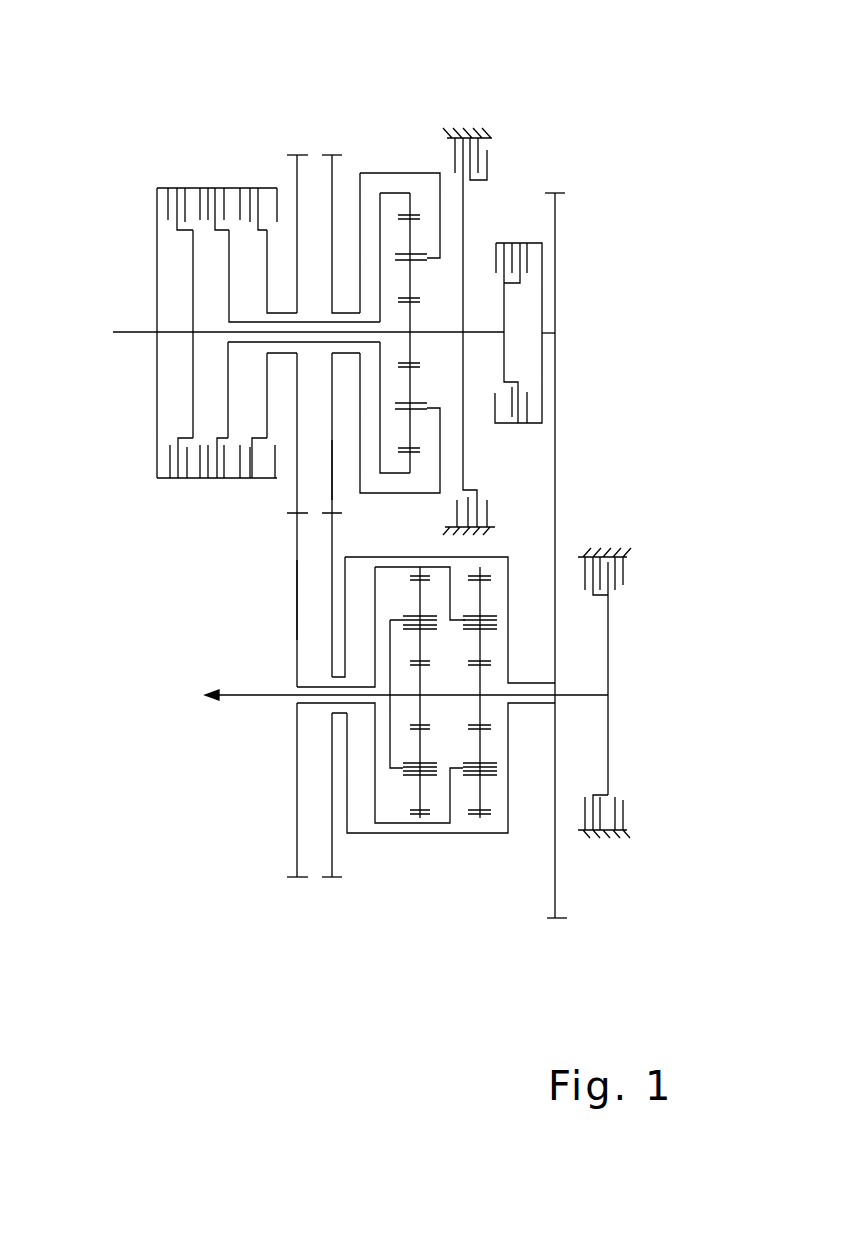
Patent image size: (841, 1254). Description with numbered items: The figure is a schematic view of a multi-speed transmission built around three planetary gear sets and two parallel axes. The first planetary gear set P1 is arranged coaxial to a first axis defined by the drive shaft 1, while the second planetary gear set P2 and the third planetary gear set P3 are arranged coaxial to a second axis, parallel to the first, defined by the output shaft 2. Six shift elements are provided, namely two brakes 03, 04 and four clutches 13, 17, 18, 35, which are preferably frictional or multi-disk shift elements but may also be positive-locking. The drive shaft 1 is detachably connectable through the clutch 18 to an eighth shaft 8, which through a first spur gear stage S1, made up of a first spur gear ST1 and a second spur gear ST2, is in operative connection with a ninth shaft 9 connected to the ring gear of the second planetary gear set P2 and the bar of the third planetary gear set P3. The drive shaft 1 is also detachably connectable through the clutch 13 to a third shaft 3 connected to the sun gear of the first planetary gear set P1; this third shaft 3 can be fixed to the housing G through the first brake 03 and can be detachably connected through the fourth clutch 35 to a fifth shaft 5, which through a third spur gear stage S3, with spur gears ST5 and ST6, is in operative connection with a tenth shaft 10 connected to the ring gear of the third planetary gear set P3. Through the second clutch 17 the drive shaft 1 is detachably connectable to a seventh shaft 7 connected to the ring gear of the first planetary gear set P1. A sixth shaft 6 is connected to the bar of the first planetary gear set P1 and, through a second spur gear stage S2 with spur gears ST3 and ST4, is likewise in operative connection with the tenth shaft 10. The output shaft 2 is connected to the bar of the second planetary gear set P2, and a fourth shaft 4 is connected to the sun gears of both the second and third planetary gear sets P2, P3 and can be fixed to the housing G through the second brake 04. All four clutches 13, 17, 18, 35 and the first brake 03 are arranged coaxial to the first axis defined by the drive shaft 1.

The drive shaft 1 is at (138, 334).
The output shaft 2 is at (252, 698).
The third shaft 3 is at (467, 238).
The fourth shaft 4 is at (612, 637).
The fifth shaft 5 is at (548, 328).
The sixth shaft 6 is at (330, 467).
The seventh shaft 7 is at (228, 257).
The eighth shaft 8 is at (297, 500).
The ninth shaft 9 is at (297, 593).
The tenth shaft 10 is at (497, 552).
The first clutch 13 is at (157, 198).
The second clutch 17 is at (213, 195).
The first clutch 18 is at (250, 193).
The fourth clutch 35 is at (527, 268).
The first spur gear stage S1 is at (297, 130).
The second spur gear stage S2 is at (332, 130).
The third spur gear stage S3 is at (555, 170).
The first planetary gear set P1 is at (410, 152).
The second planetary gear set P2 is at (420, 867).
The third planetary gear set P3 is at (480, 867).
The first spur gear of the first spur gear stage ST1 is at (289, 152).
The second spur gear of the first spur gear stage ST2 is at (288, 882).
The first spur gear of the second spur gear stage ST3 is at (323, 152).
The second spur gear of the second spur gear stage ST4 is at (338, 882).
The first spur gear of the third spur gear stage ST5 is at (565, 192).
The second spur gear of the third spur gear stage ST6 is at (560, 922).
The housing G is at (460, 140).
The first brake 03 is at (488, 165).
The second brake 04 is at (617, 580).